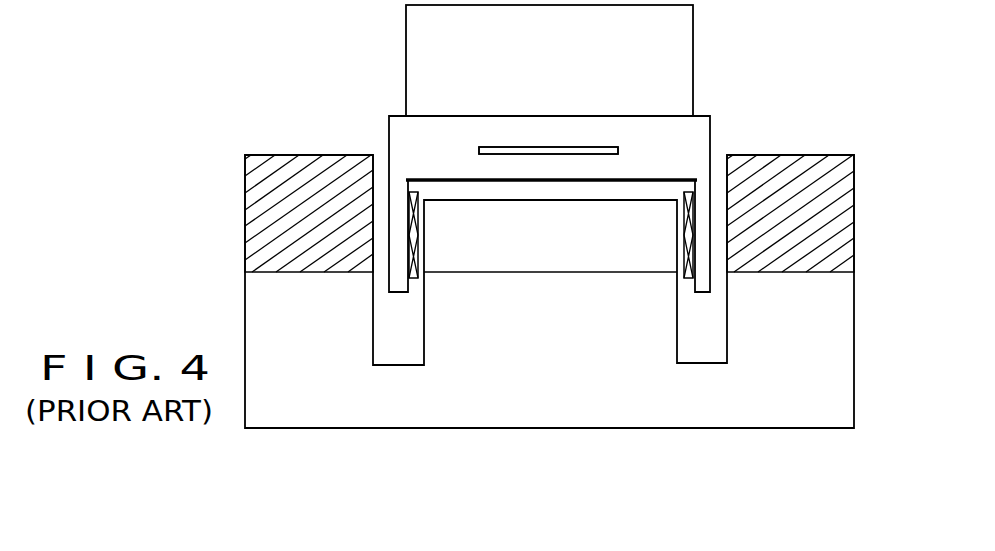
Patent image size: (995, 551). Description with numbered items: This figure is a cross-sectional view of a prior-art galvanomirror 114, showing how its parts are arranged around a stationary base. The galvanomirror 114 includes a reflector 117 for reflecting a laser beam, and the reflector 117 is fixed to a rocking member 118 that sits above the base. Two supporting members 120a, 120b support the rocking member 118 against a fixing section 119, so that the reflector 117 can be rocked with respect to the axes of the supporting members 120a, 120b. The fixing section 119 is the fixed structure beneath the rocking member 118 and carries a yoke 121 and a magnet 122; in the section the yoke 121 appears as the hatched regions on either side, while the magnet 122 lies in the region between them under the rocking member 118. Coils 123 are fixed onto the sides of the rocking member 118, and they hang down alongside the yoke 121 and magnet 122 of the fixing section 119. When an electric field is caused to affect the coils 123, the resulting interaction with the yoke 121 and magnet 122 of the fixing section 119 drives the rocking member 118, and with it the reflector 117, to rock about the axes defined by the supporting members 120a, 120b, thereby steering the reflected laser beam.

The galvanomirror 114 is at (328, 95).
The reflector 117 is at (683, 38).
The rocking member 118 is at (711, 122).
The fixing section 119 is at (260, 300).
The supporting member 120a is at (537, 147).
The supporting member 120b is at (548, 150).
The yoke 121 is at (258, 207).
The magnet 122 is at (550, 250).
The coils 123 is at (408, 205).